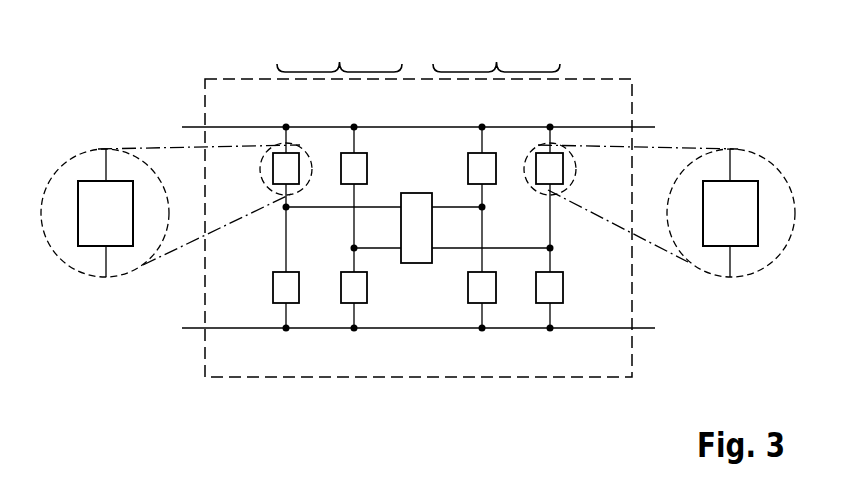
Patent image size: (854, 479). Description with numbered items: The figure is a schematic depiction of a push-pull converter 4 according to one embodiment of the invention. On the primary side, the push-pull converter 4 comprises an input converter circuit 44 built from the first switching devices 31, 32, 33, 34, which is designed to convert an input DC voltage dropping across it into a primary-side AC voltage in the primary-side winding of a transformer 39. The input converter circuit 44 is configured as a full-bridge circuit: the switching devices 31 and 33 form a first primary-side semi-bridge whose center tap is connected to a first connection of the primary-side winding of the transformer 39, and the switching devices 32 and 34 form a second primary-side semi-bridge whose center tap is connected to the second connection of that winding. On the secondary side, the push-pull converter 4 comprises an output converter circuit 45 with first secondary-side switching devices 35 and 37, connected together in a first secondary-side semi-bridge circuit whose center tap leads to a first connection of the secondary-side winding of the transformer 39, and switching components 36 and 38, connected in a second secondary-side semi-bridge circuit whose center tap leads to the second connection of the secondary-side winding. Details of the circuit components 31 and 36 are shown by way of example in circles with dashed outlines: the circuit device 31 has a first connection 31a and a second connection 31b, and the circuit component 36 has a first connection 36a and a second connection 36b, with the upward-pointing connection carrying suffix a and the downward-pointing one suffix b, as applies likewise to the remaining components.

The push-pull converter 4 is at (222, 70).
The switching device 31 is at (293, 153).
The switching device 32 is at (360, 153).
The switching device 33 is at (293, 304).
The switching device 34 is at (360, 304).
The secondary-side switching device 35 is at (477, 153).
The switching component 36 is at (545, 153).
The secondary-side switching device 37 is at (478, 304).
The switching component 38 is at (545, 304).
The transformer 39 is at (415, 193).
The primary-side input converter circuit 44 is at (339, 52).
The output converter circuit 45 is at (496, 52).
The first connection 31a is at (104, 178).
The second connection 31b is at (104, 250).
The first connection 36a is at (731, 178).
The second connection 36b is at (731, 250).